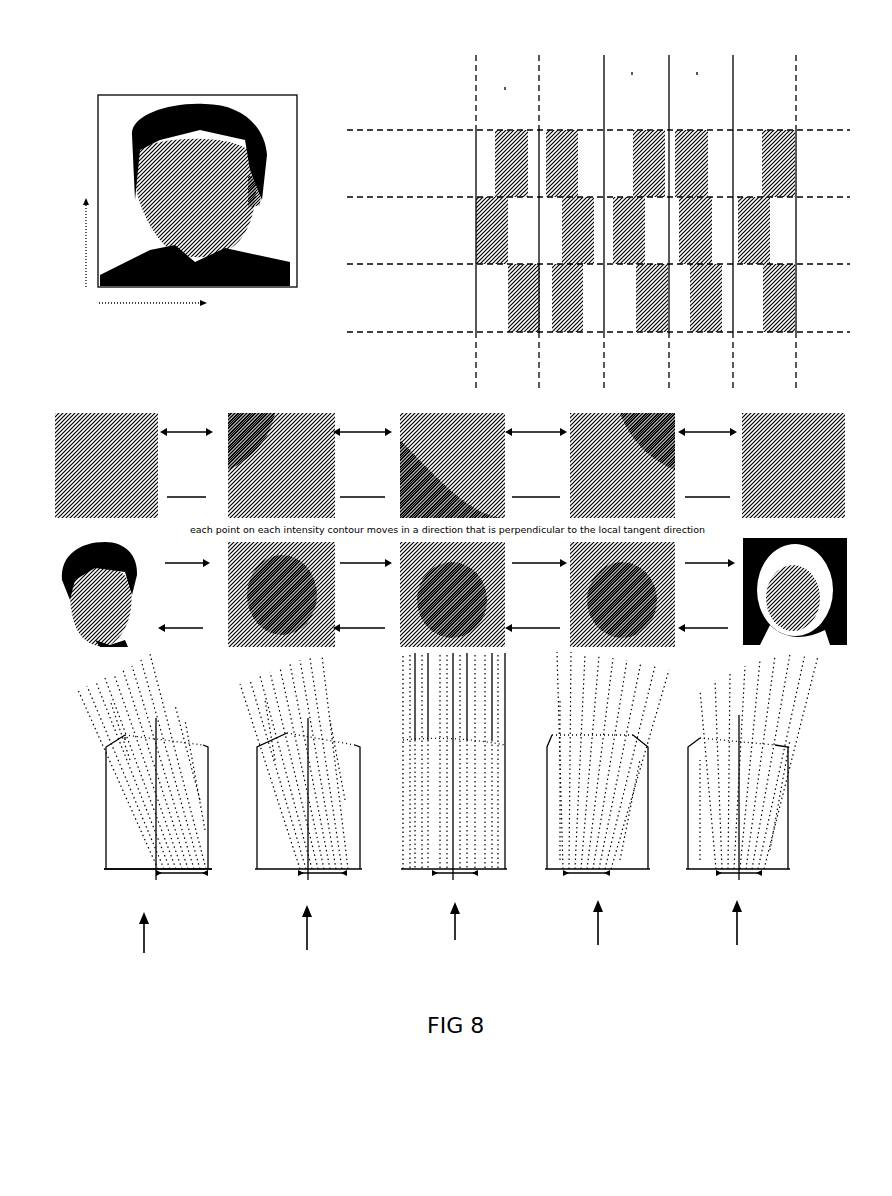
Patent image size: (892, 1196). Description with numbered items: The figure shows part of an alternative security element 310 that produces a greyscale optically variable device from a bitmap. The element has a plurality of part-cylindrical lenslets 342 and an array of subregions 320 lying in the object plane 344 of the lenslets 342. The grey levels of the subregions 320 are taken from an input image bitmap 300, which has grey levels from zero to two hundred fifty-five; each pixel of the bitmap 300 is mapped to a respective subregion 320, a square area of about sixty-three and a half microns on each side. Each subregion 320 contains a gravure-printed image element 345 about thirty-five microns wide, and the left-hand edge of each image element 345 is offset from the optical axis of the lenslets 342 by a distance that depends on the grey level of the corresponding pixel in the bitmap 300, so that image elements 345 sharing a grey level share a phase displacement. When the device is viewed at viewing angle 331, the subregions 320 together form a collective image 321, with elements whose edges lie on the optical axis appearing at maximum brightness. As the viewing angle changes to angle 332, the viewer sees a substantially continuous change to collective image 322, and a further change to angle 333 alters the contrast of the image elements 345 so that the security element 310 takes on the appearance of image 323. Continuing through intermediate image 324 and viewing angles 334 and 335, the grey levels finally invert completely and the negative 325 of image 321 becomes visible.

The input image bitmap 300 is at (128, 95).
The security element 310 is at (452, 66).
The subregion 320 is at (482, 142).
The part-cylindrical lenslet 342 is at (505, 87).
The image element 345 is at (507, 172).
The collective image 321 is at (88, 642).
The collective image 322 is at (233, 648).
The image 323 is at (413, 638).
The view image at angle 0.75 324 is at (575, 645).
The negative image 325 is at (745, 638).
The viewing angle 331 is at (100, 740).
The viewing angle 332 is at (252, 728).
The viewing angle 333 is at (403, 738).
The ray diagram for view angle 0.75 334 is at (553, 732).
The ray diagram for view angle 1.00 335 is at (793, 732).
The object plane 344 is at (117, 870).